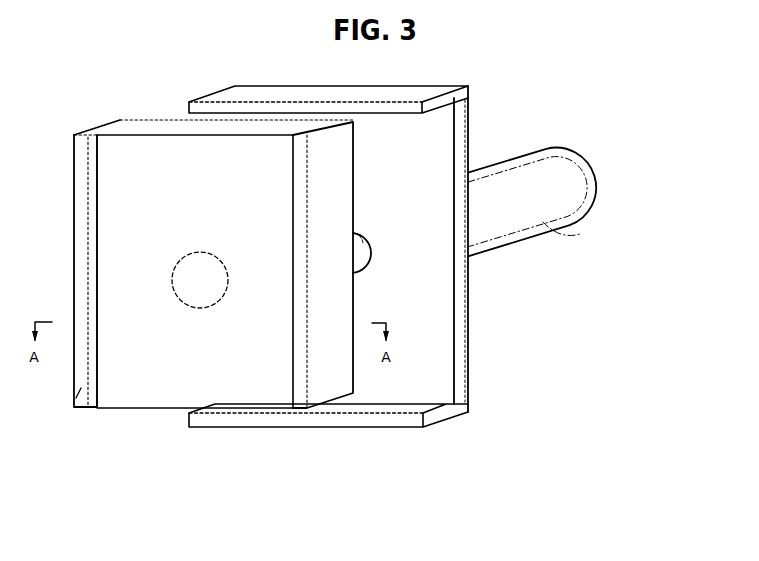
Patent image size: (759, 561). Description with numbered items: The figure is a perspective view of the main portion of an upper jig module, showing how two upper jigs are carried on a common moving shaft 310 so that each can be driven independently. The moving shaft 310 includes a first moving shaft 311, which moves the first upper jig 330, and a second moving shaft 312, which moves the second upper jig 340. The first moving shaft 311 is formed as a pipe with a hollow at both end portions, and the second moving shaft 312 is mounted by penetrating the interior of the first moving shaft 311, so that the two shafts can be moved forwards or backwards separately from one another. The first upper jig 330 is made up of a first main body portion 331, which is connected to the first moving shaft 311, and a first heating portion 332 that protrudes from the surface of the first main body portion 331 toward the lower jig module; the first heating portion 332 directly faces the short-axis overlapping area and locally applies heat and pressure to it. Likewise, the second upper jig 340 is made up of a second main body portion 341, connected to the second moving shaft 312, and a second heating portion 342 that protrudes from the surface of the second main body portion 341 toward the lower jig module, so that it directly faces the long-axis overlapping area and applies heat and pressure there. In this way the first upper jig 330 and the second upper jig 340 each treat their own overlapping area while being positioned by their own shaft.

The moving shaft 310 is at (543, 230).
The first moving shaft 311 is at (598, 186).
The second moving shaft 312 is at (580, 234).
The first upper jig 330 is at (401, 266).
The first main body portion 331 is at (425, 373).
The first heating portion 332 is at (440, 408).
The second upper jig 340 is at (199, 328).
The second main body portion 341 is at (138, 383).
The second heating portion 342 is at (76, 410).